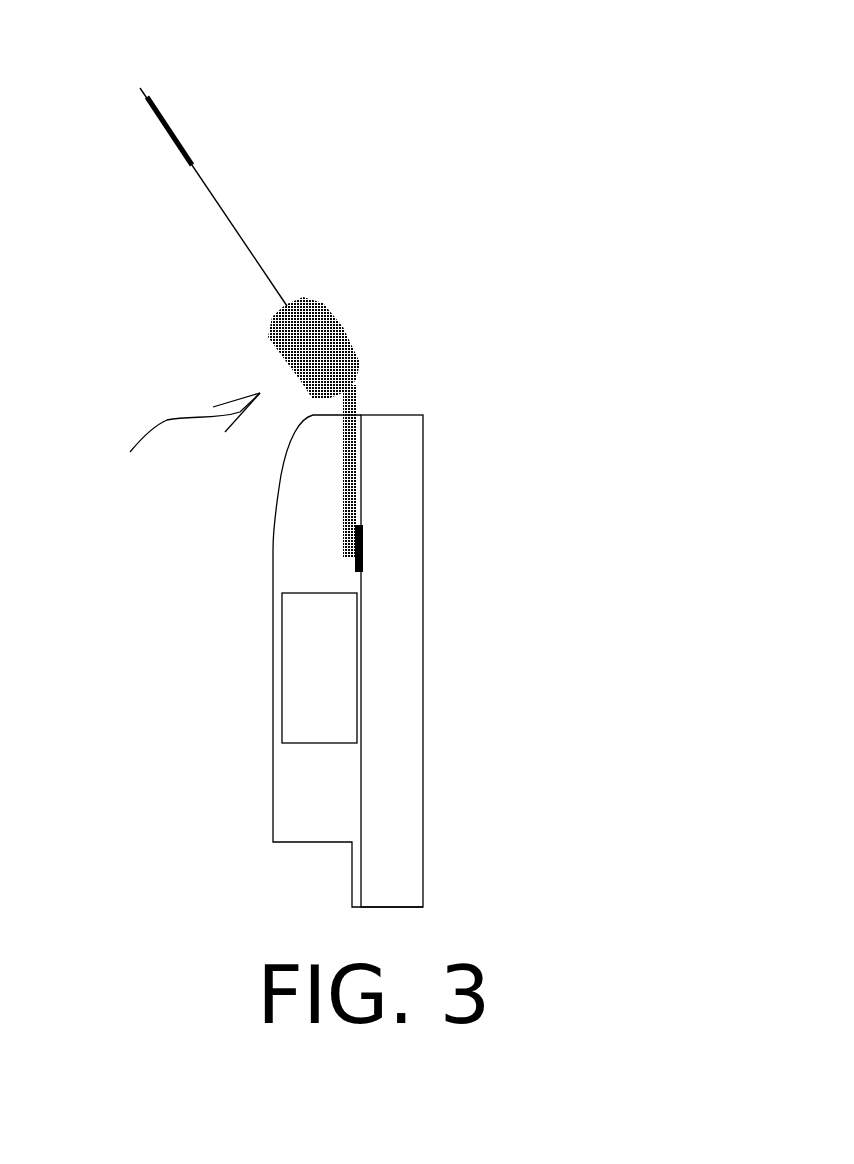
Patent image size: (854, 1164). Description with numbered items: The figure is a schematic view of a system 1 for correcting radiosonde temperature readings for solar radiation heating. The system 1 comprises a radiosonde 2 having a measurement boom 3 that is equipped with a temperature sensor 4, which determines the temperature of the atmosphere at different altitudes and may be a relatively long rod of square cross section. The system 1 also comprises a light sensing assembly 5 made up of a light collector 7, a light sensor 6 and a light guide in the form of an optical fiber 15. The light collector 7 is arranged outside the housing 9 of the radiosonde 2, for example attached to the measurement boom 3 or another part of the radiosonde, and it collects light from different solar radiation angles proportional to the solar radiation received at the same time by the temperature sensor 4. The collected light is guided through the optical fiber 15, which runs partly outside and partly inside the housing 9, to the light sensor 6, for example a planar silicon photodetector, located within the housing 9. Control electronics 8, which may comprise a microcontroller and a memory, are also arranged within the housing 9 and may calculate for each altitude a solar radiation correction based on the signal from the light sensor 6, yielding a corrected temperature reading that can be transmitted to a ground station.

The system 1 is at (399, 646).
The radiosonde 2 is at (423, 714).
The measurement boom 3 is at (233, 230).
The temperature sensor 4 is at (170, 128).
The light sensing assembly 5 is at (178, 451).
The light sensor 6 is at (363, 548).
The light collector 7 is at (323, 308).
The control electronics 8 is at (277, 680).
The housing 9 is at (273, 788).
The optical fiber 15 is at (340, 478).